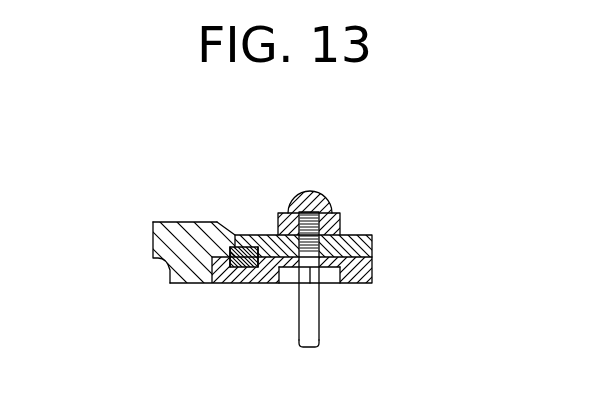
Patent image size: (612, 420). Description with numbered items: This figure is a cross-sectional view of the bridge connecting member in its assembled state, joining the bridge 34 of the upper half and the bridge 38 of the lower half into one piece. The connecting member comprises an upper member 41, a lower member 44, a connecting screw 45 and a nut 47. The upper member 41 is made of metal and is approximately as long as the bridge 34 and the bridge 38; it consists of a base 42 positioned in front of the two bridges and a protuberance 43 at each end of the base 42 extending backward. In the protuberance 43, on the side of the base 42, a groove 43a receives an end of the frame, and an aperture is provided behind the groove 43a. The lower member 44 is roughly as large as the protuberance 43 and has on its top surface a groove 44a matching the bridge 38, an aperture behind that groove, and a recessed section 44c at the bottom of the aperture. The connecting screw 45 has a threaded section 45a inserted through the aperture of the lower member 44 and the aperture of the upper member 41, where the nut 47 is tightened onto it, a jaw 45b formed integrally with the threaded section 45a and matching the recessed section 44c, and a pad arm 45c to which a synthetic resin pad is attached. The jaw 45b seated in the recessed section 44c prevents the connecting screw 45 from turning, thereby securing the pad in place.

The bridge 34 is at (240, 248).
The bridge 38 is at (247, 268).
The upper member 41 is at (188, 222).
The base 42 is at (153, 238).
The protuberance 43 is at (372, 242).
The groove 43a is at (257, 246).
The lower member 44 is at (372, 267).
The groove 44a is at (233, 267).
The recessed section 44c is at (325, 284).
The connecting screw 45 is at (282, 341).
The threaded section 45a is at (340, 222).
The jaw 45b is at (285, 284).
The pad arm 45c is at (319, 336).
The nut 47 is at (308, 192).